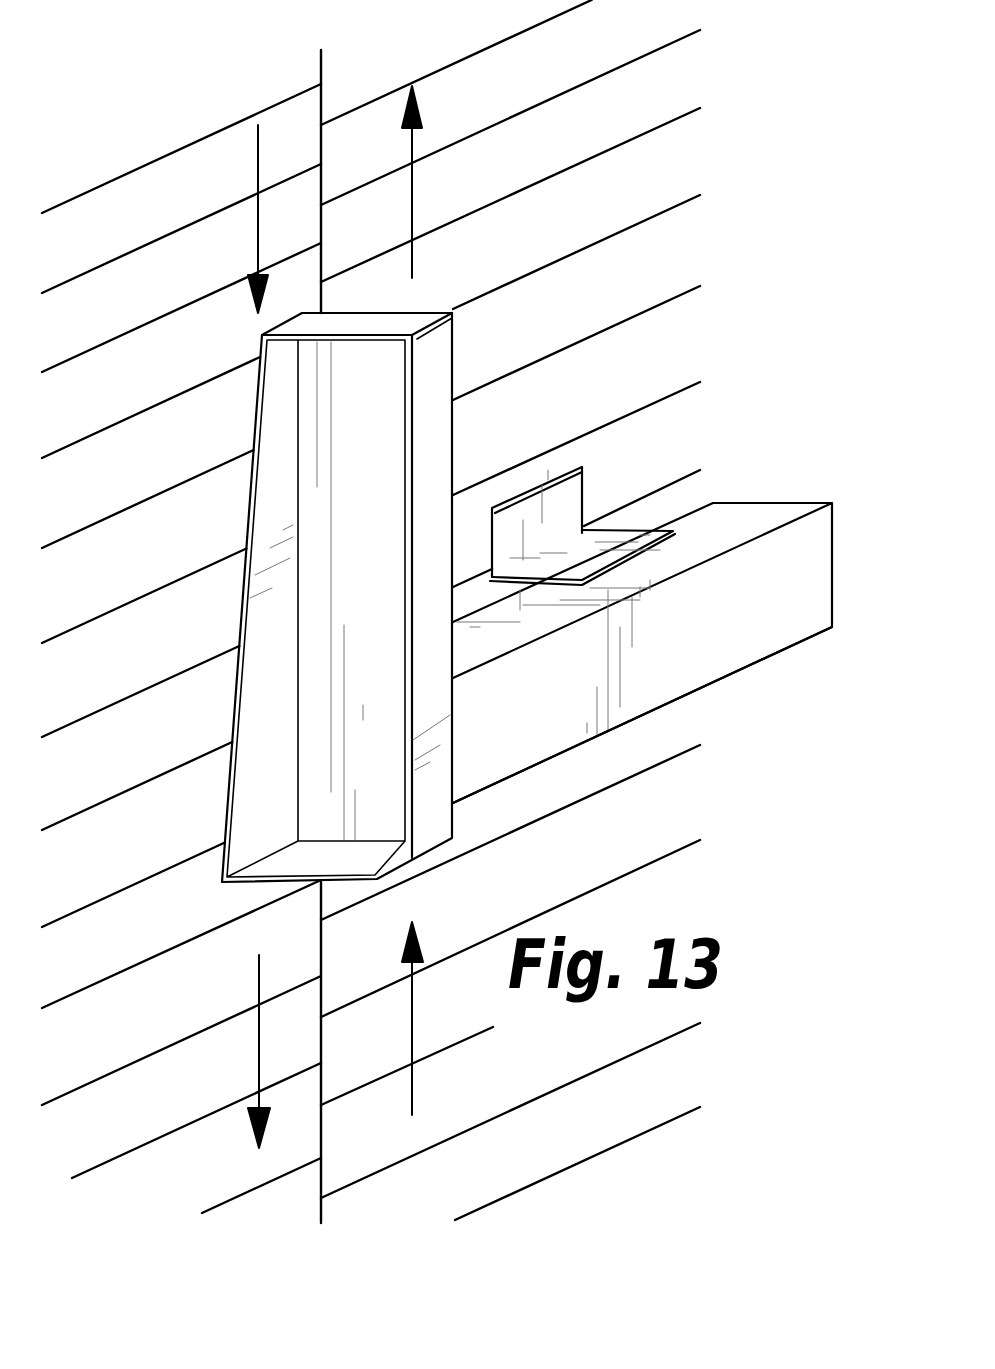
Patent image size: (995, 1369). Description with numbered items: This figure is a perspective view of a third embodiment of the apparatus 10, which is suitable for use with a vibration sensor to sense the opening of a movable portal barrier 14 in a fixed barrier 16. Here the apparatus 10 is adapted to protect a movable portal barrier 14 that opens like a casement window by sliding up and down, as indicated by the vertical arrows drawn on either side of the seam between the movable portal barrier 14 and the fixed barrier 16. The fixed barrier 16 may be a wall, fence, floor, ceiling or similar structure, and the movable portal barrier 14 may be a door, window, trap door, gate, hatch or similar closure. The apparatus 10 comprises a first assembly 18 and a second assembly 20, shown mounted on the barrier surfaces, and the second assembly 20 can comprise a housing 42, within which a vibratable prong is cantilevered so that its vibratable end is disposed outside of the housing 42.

The apparatus 10 is at (544, 579).
The movable portal barrier 14 is at (582, 236).
The fixed barrier 16 is at (205, 163).
The first assembly 18 is at (660, 641).
The second assembly 20 is at (433, 828).
The housing 42 is at (766, 660).